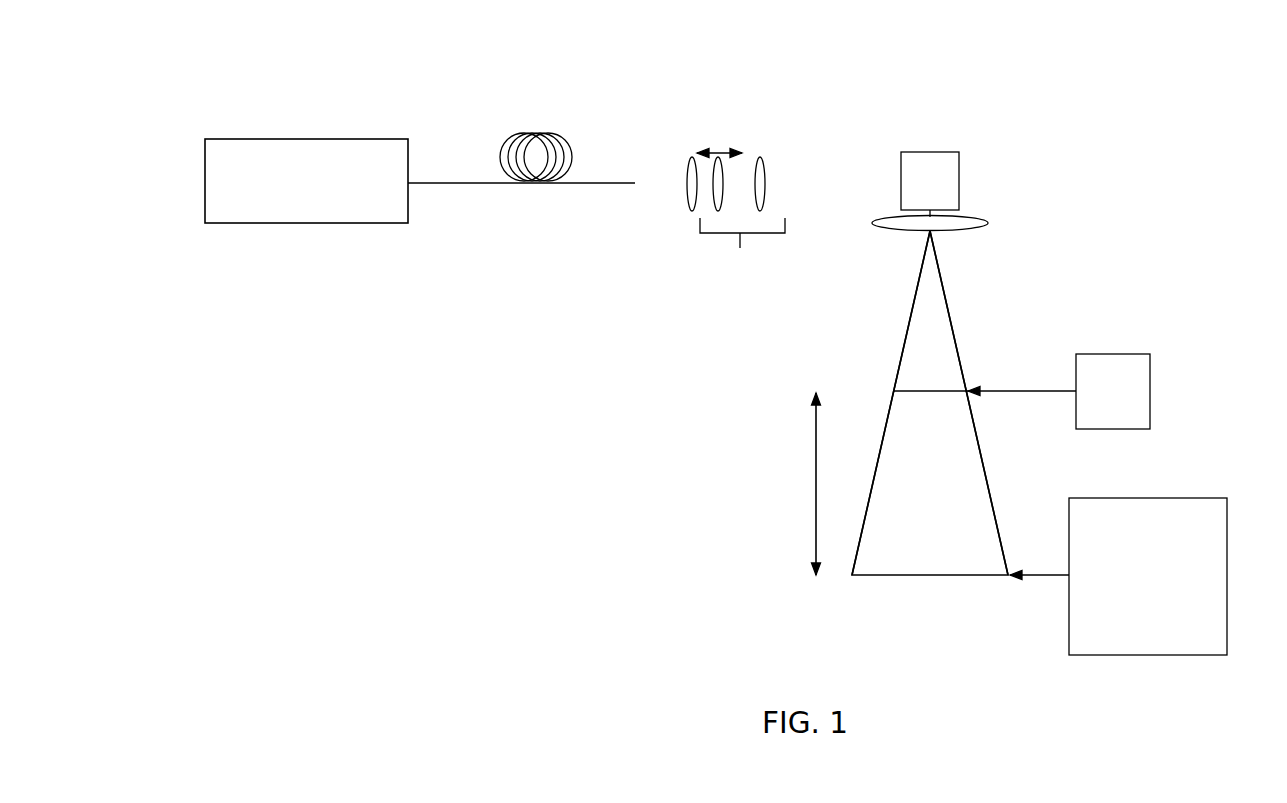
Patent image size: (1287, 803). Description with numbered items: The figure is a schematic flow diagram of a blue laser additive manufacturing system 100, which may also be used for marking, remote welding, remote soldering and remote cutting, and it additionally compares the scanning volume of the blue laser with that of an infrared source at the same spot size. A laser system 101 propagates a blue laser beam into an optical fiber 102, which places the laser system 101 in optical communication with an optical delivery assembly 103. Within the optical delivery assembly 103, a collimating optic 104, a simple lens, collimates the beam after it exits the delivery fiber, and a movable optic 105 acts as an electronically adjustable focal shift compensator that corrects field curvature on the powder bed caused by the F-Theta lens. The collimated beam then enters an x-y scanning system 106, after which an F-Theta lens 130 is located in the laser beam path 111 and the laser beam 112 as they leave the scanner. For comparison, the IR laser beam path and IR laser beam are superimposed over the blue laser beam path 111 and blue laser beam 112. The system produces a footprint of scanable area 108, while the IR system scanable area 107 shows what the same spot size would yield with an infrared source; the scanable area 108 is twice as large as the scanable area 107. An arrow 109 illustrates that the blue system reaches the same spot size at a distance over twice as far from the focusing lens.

The blue laser additive manufacturing system 100 is at (430, 366).
The laser system 101 is at (313, 139).
The optical fiber 102 is at (535, 134).
The optical delivery assembly 103 is at (709, 128).
The collimating optic 104 is at (692, 157).
The movable optic 105 is at (725, 153).
The x-y scanning system 106 is at (925, 152).
The F-Theta lens 130 is at (977, 217).
The laser beam path 111 is at (915, 287).
The laser beam 112 is at (900, 337).
The IR system scanable area 107 is at (1113, 354).
The scanable area 108 is at (1202, 498).
The arrow 109 is at (816, 468).